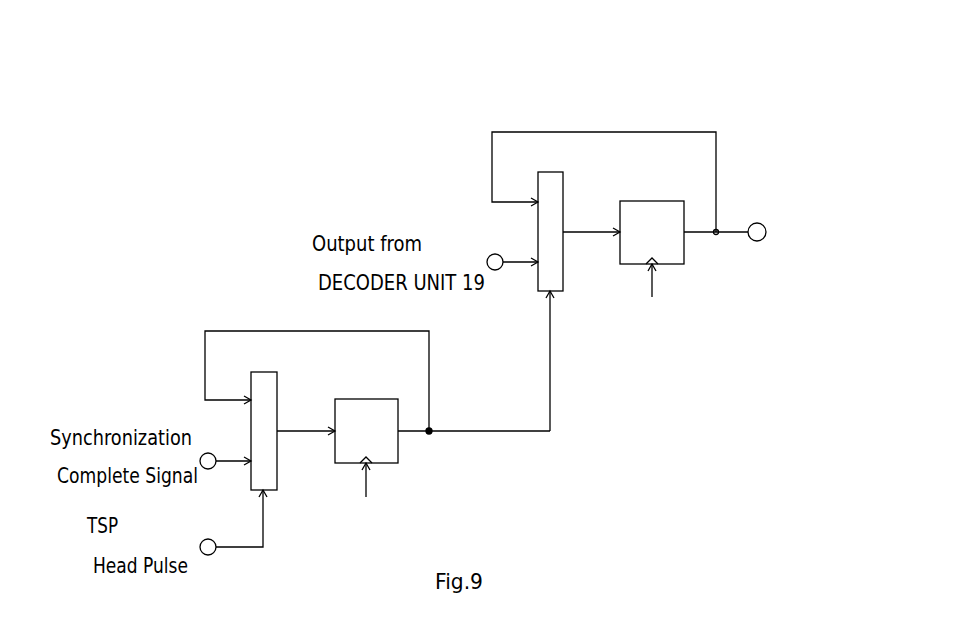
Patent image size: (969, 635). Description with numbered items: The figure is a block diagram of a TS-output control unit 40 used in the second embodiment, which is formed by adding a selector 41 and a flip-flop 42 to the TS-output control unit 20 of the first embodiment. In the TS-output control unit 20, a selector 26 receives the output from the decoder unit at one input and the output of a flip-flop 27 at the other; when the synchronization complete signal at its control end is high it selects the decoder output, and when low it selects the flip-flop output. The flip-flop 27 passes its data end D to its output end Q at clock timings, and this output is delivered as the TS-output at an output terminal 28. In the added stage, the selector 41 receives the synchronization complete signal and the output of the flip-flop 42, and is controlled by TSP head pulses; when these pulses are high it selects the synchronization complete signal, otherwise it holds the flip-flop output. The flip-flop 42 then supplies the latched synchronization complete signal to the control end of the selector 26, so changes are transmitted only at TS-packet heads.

The TS-output control unit 20 is at (593, 115).
The selector 26 is at (563, 190).
The flip-flop 27 is at (651, 201).
The output terminal 28 is at (757, 223).
The TS-output control unit 40 is at (373, 227).
The selector 41 is at (277, 387).
The flip-flop 42 is at (365, 399).